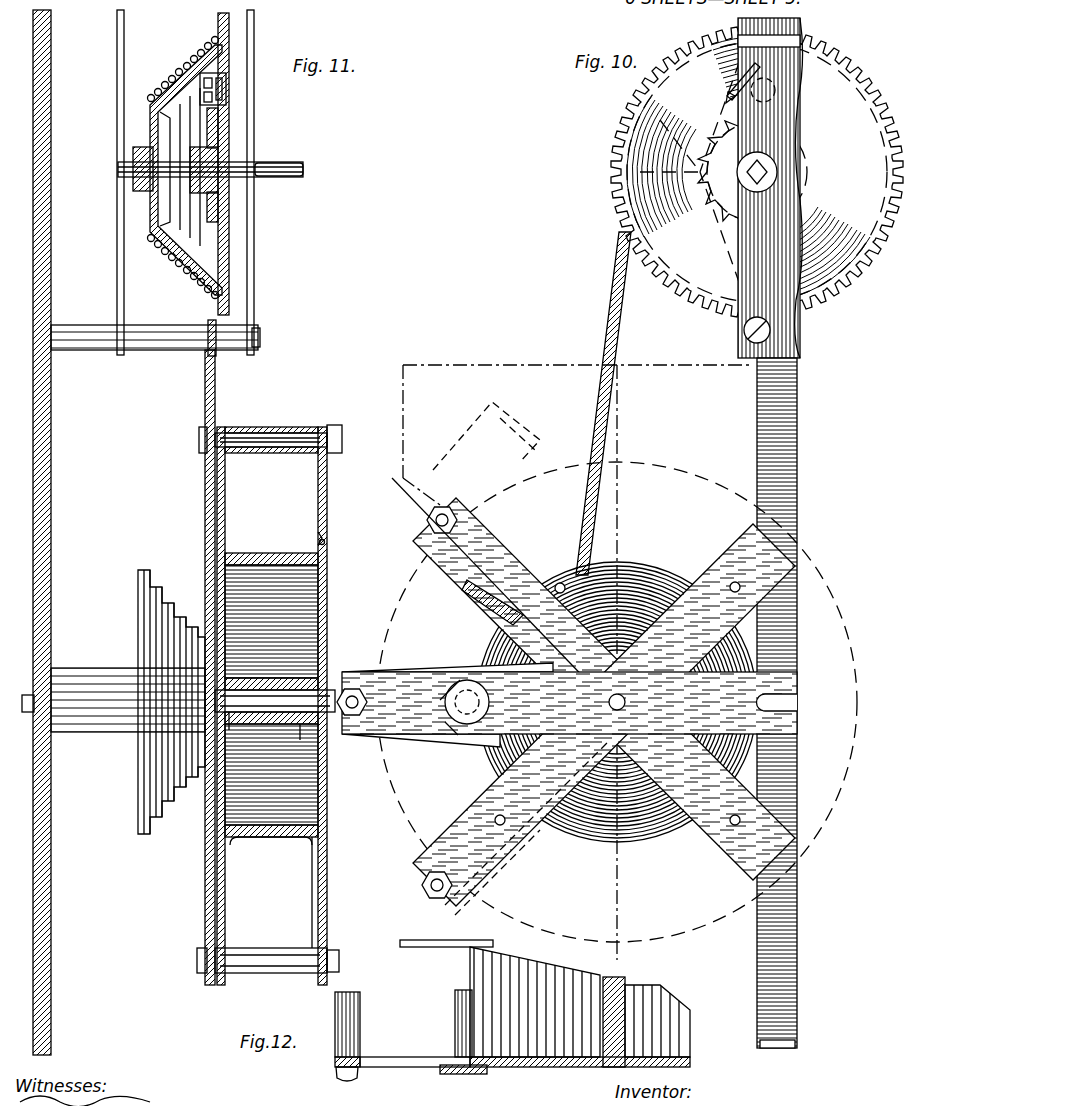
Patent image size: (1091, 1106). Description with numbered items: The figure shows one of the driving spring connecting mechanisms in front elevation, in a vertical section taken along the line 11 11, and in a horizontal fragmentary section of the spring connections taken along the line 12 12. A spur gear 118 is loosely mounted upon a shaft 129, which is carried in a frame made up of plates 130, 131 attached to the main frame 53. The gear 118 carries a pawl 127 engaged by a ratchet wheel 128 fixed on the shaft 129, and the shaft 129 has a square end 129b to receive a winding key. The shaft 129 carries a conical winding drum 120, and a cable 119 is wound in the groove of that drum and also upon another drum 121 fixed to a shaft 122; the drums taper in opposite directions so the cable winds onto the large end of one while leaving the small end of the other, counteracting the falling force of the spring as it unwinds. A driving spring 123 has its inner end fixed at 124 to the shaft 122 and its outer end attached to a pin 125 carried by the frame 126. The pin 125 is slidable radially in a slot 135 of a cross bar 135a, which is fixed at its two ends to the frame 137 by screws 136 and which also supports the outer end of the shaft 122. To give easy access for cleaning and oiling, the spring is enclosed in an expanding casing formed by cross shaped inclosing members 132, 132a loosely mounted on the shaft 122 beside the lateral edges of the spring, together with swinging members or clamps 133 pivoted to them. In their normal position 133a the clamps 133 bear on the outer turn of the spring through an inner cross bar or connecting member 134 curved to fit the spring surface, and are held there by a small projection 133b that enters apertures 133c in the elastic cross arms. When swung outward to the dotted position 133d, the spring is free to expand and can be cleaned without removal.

In FIG. 10, the section line 11 11 is at (770, 27).
In FIG. 12, the section line 11 11 is at (628, 960).
In FIG. 10, the section line 12 12 is at (379, 718).
In FIG. 11, the main frame 53 is at (54, 429).
In FIG. 11, the spur gear 118 is at (229, 305).
In FIG. 10, the spur gear 118 is at (612, 185).
In FIG. 11, the cable 119 is at (205, 400).
In FIG. 10, the cable 119 is at (612, 318).
In FIG. 11, the conical winding drum 120 is at (178, 262).
In FIG. 10, the conical winding drum 120 is at (625, 133).
In FIG. 11, the drum 121 is at (172, 600).
In FIG. 11, the shaft 122 is at (229, 714).
In FIG. 12, the shaft 122 is at (610, 1037).
In FIG. 11, the driving spring 123 is at (319, 590).
In FIG. 10, the driving spring 123 is at (578, 620).
In FIG. 12, the driving spring 123 is at (535, 1002).
In FIG. 11, the inner end fixing point of spring 124 is at (319, 642).
In FIG. 12, the inner end fixing point of spring 124 is at (645, 1007).
In FIG. 10, the pin 125 is at (424, 722).
In FIG. 12, the pin 125 is at (478, 1075).
In FIG. 10, the frame 126 is at (350, 737).
In FIG. 12, the frame 126 is at (512, 1070).
In FIG. 11, the pawl 127 is at (225, 95).
In FIG. 10, the pawl 127 is at (725, 95).
In FIG. 11, the ratchet wheel 128 is at (215, 140).
In FIG. 10, the ratchet wheel 128 is at (640, 225).
In FIG. 11, the shaft 129 is at (240, 176).
In FIG. 11, the square end of shaft 129b is at (290, 166).
In FIG. 11, the plate 130 is at (255, 328).
In FIG. 11, the plate 131 is at (116, 322).
In FIG. 11, the cross shaped inclosing member 132 is at (328, 470).
In FIG. 10, the cross shaped inclosing member 132 is at (452, 568).
In FIG. 11, the cross shaped inclosing member 132a is at (216, 490).
In FIG. 11, the swinging member or clamp 133 is at (330, 440).
In FIG. 10, the swinging member or clamp 133 is at (487, 607).
In FIG. 10, the normal position of clamp 133a is at (500, 625).
In FIG. 11, the projection 133b is at (323, 536).
In FIG. 11, the aperture 133c is at (326, 542).
In FIG. 10, the aperture 133c is at (492, 580).
In FIG. 10, the outwardly swung position of clamp 133d is at (486, 426).
In FIG. 11, the inner cross bar or connecting member 134 is at (287, 553).
In FIG. 10, the inner cross bar or connecting member 134 is at (507, 618).
In FIG. 10, the slot 135 is at (402, 717).
In FIG. 11, the cross bar 135a is at (317, 740).
In FIG. 10, the cross bar 135a is at (458, 717).
In FIG. 10, the screw 136 is at (344, 722).
In FIG. 12, the screw 136 is at (353, 1073).
In FIG. 11, the frame 137 is at (120, 673).
In FIG. 10, the frame 137 is at (440, 665).
In FIG. 12, the frame 137 is at (353, 1002).